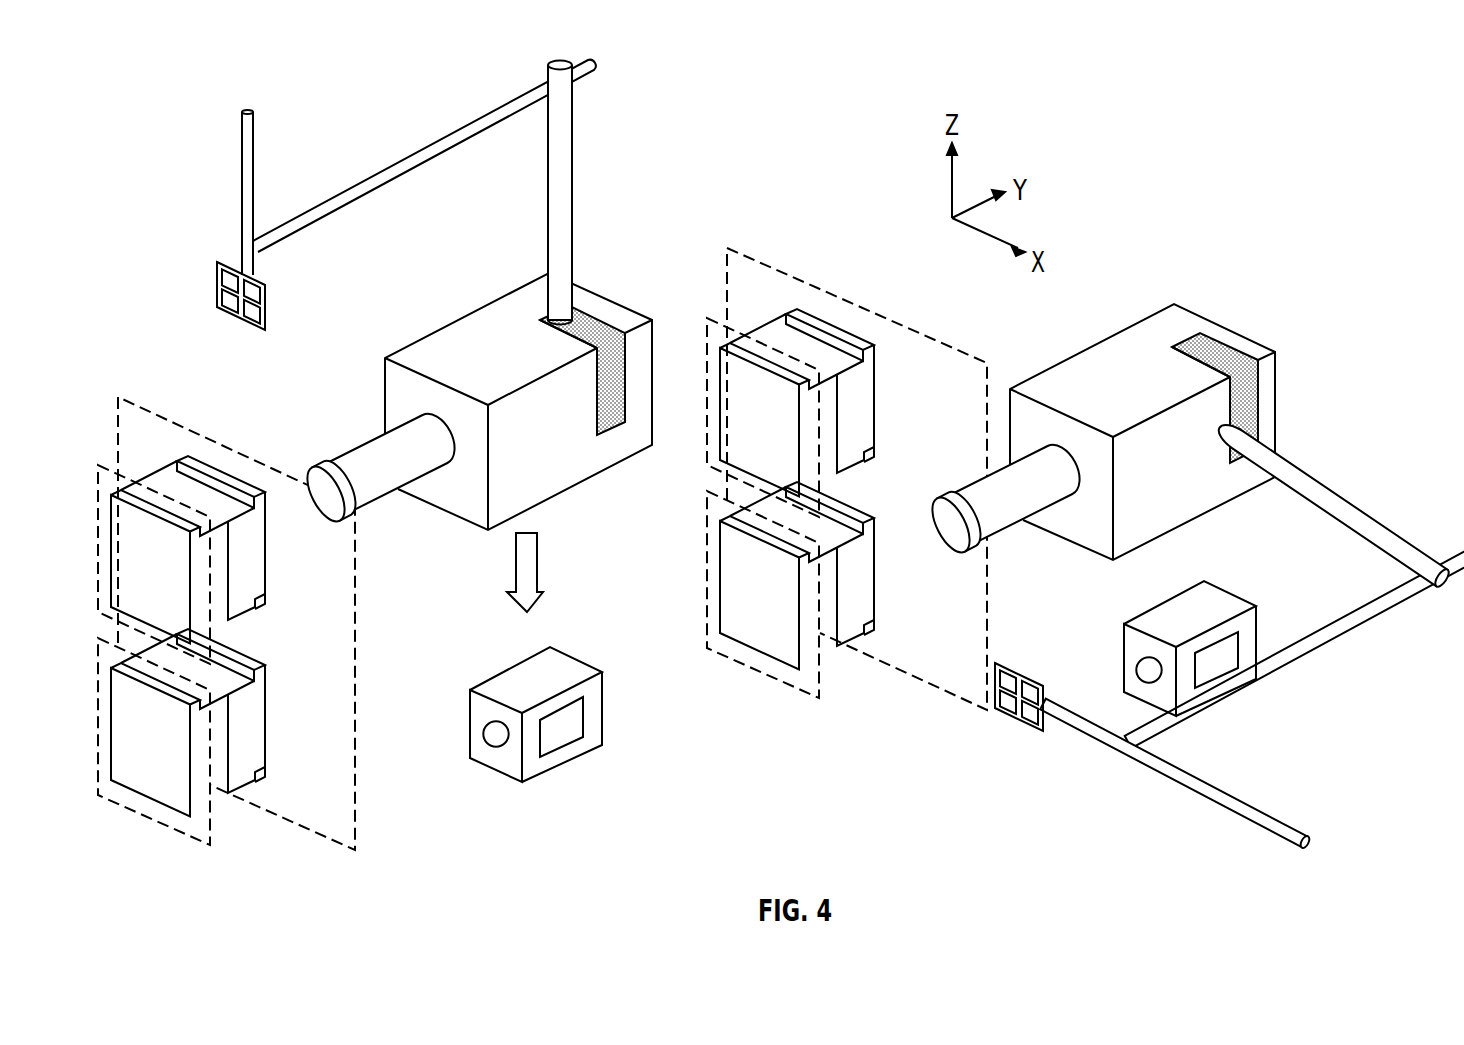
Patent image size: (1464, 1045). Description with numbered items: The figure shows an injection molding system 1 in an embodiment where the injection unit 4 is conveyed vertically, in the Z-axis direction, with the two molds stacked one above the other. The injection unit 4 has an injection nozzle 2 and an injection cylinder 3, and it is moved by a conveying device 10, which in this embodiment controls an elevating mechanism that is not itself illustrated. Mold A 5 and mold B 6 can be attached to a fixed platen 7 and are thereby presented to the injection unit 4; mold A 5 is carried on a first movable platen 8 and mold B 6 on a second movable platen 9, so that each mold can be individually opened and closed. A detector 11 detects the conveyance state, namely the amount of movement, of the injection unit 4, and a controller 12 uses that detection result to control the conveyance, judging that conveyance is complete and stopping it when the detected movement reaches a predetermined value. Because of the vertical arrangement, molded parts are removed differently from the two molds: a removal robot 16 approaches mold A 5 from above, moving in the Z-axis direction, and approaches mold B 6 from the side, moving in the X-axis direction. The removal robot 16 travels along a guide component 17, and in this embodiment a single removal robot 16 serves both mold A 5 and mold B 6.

The injection molding system 1 is at (374, 302).
The injection nozzle 2 is at (303, 498).
The injection cylinder 3 is at (360, 460).
The injection unit 4 is at (463, 337).
The mold A 5 is at (192, 492).
The mold B 6 is at (247, 707).
The fixed platen 7 is at (358, 600).
The first movable platen 8 is at (135, 478).
The second movable platen 9 is at (153, 820).
The conveying device 10 is at (498, 687).
The detector 11 is at (482, 735).
The controller 12 is at (560, 747).
The removal robot 16 is at (215, 290).
The guide component 17 is at (603, 322).